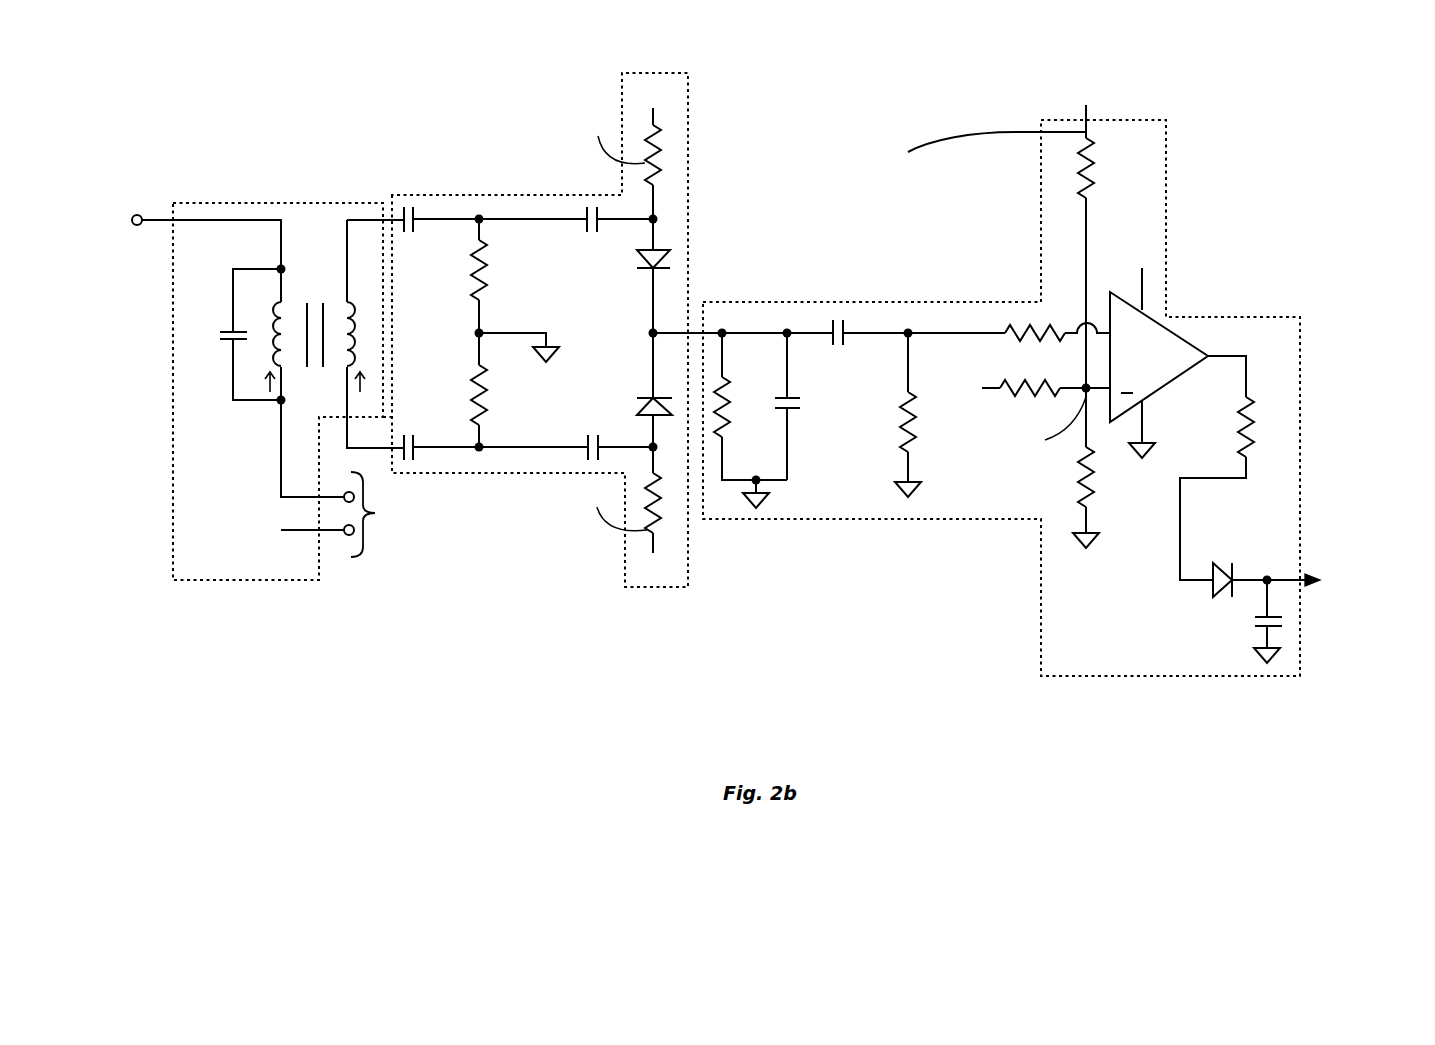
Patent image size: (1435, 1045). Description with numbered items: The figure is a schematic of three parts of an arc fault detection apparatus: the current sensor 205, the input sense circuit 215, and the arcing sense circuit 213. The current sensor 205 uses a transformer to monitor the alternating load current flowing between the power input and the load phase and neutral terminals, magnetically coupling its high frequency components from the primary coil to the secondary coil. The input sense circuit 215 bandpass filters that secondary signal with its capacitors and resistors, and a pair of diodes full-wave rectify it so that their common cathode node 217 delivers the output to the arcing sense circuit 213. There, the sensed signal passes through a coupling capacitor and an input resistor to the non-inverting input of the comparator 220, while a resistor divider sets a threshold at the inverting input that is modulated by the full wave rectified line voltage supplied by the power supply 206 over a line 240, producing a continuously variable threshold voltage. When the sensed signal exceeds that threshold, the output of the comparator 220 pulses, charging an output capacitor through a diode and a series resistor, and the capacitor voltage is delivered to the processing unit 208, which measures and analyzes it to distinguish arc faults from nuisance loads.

The current sensor 205 is at (270, 582).
The input sense circuit 215 is at (633, 590).
The arcing sense circuit 213 is at (928, 520).
The node 217 is at (652, 332).
The comparator 220 is at (1166, 367).
The power supply 206 is at (1083, 82).
The line 240 is at (968, 181).
The processing unit 208 is at (1353, 578).